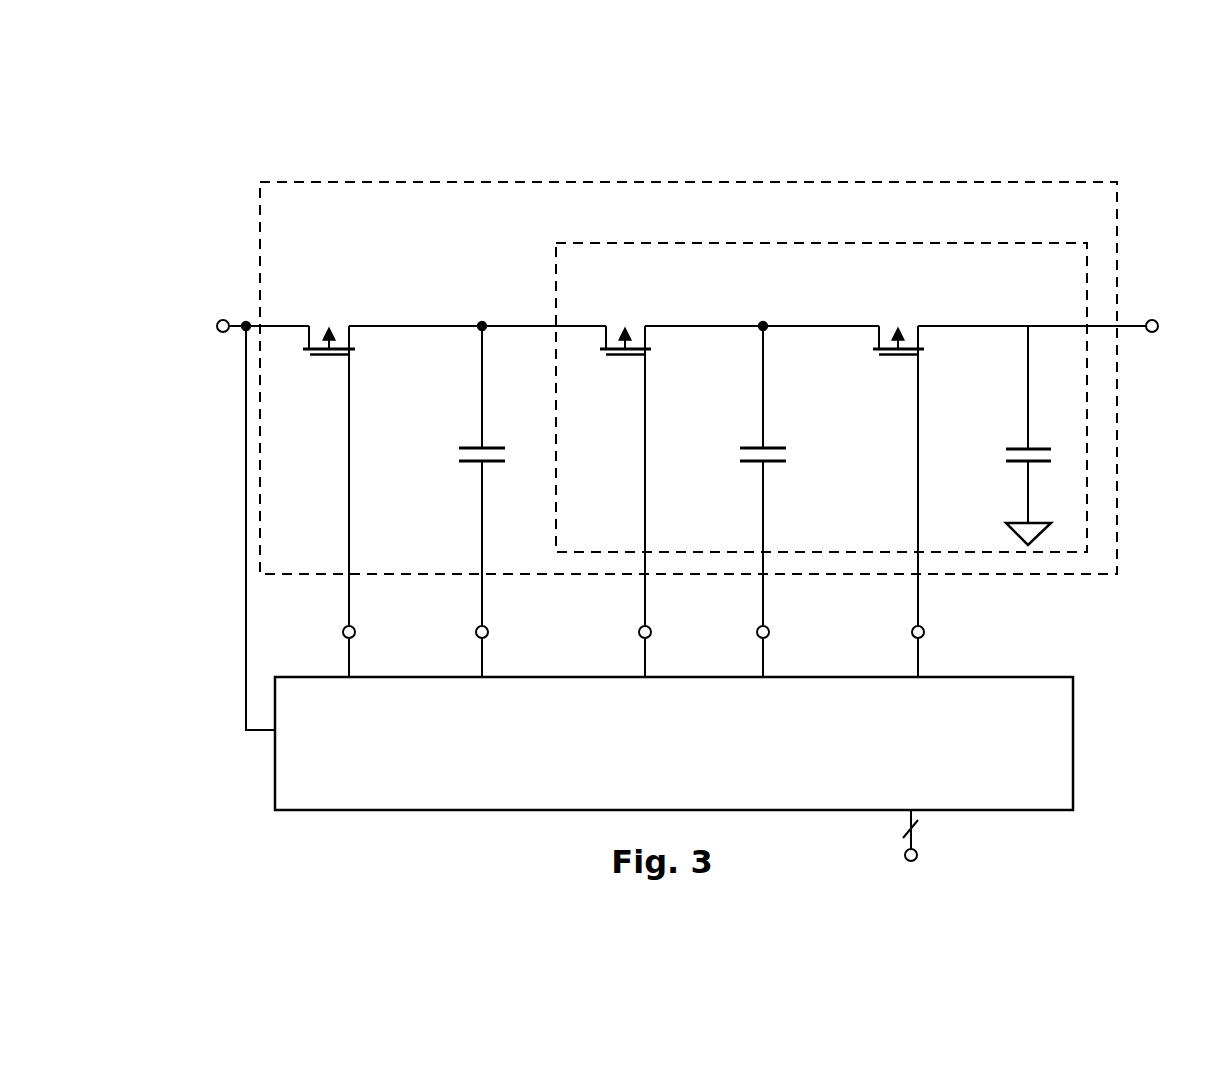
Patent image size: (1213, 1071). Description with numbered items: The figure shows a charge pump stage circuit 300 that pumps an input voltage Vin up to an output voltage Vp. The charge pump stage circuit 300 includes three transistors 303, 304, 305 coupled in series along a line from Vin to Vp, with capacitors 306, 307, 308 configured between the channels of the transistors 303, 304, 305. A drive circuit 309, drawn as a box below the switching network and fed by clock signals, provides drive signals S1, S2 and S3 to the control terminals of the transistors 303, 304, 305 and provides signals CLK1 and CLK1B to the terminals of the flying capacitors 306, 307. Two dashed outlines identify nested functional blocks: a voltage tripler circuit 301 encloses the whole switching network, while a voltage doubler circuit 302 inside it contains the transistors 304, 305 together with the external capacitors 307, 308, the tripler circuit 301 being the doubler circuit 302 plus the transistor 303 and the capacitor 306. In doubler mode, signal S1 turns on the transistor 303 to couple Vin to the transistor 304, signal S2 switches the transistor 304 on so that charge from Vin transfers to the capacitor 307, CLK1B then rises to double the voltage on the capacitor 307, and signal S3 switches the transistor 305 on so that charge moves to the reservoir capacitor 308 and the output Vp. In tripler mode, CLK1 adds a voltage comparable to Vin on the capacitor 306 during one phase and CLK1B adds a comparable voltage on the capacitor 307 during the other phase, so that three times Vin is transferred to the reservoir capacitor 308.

The charge pump stage circuit 300 is at (690, 453).
The voltage tripler circuit 301 is at (997, 182).
The voltage doubler circuit 302 is at (1088, 270).
The transistor 303 is at (328, 360).
The transistor 304 is at (623, 359).
The transistor 305 is at (896, 359).
The capacitor 306 is at (468, 463).
The capacitor 307 is at (752, 463).
The reservoir capacitor 308 is at (1016, 463).
The drive circuit 309 is at (1074, 742).